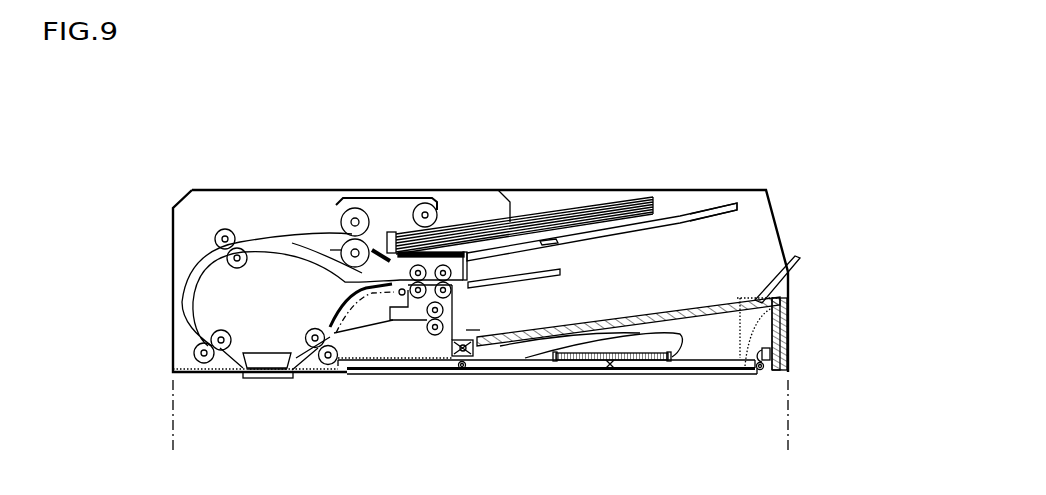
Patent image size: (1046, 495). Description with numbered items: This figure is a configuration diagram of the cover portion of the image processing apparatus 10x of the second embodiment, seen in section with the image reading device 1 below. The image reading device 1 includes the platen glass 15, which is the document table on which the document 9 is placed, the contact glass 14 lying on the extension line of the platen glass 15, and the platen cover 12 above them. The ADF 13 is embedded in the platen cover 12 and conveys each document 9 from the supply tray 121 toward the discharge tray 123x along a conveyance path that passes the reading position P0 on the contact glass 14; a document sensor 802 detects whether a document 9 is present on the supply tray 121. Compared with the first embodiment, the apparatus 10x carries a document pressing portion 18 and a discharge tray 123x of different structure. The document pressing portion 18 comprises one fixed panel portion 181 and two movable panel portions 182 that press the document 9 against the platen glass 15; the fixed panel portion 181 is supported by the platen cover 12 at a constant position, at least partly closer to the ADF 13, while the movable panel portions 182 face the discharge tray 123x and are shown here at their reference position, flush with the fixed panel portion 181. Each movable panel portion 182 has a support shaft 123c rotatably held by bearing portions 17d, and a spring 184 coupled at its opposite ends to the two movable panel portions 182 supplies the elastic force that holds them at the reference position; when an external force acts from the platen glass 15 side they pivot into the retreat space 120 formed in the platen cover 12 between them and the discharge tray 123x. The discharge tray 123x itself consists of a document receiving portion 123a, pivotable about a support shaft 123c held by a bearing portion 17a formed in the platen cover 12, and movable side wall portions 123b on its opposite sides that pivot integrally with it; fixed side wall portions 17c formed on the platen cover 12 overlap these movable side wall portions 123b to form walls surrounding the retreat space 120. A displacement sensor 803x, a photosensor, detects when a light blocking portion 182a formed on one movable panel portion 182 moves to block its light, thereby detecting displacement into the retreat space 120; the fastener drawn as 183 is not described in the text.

The image processing apparatus 10x is at (172, 140).
The image reading device 1 is at (282, 166).
The ADF 13 is at (192, 224).
The platen cover 12 is at (173, 332).
The contact glass 14 is at (243, 376).
The document pressing portion 18 is at (307, 357).
The reading position P0 is at (271, 374).
The document 9 is at (572, 210).
The supply tray 121 is at (727, 203).
The document sensor 802 is at (568, 243).
The retreat space 120 is at (624, 291).
The discharge tray 123x is at (722, 298).
The movable side wall portions 123b is at (786, 270).
The support shaft 123c is at (469, 338).
The document receiving portion 123a is at (574, 322).
The light blocking portion 182a is at (785, 305).
The displacement sensor 803x is at (771, 350).
The fixed side wall portions 17c is at (792, 358).
The fixed panel portion 181 is at (362, 358).
The movable panel portions 182 is at (675, 356).
The fixing member 183 is at (455, 368).
The bearing portions 17d is at (461, 370).
The bearing portion 17a is at (470, 358).
The spring 184 is at (554, 352).
The platen glass 15 is at (631, 376).